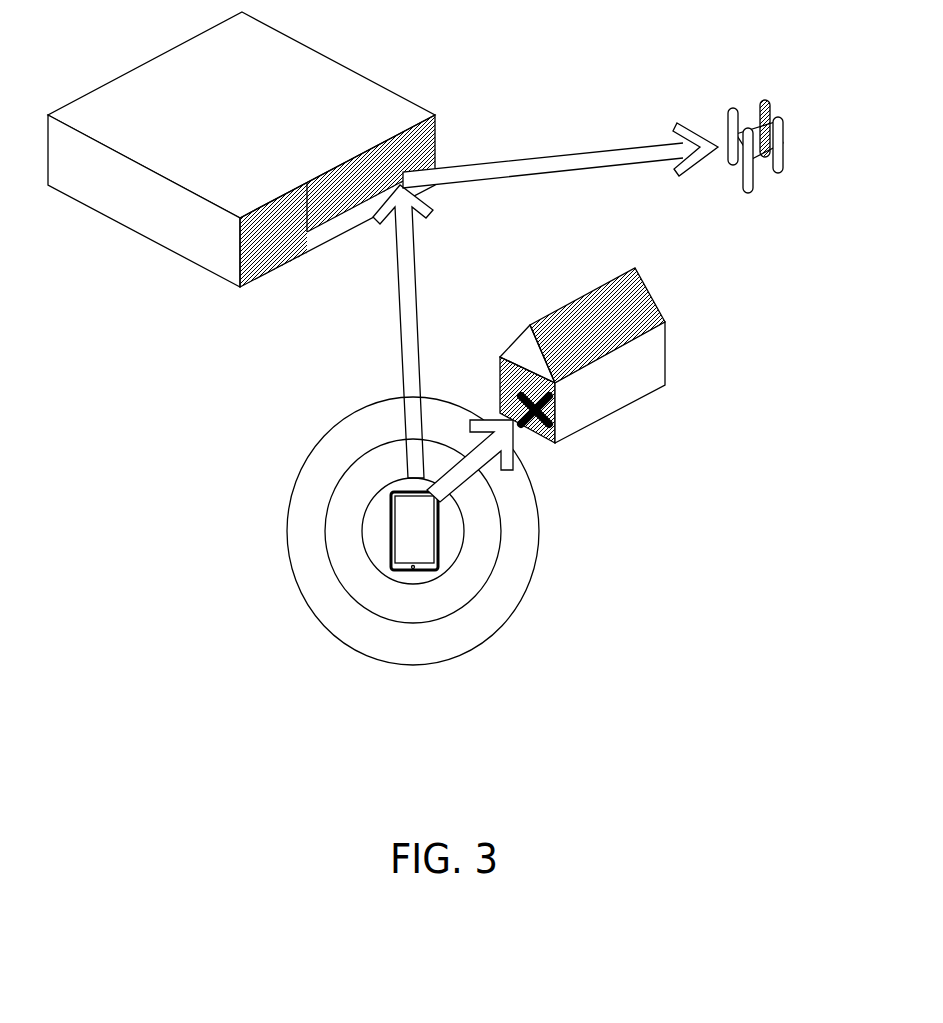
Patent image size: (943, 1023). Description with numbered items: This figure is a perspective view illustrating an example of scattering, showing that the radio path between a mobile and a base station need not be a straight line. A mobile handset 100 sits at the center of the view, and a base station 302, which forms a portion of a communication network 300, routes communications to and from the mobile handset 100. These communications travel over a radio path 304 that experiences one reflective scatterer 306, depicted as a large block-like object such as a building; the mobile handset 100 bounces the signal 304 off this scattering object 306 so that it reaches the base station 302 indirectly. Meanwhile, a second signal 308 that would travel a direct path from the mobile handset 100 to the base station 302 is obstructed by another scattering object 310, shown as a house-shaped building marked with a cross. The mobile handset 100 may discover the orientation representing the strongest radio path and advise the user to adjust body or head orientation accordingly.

The mobile handset 100 is at (390, 541).
The communication network 300 is at (763, 118).
The base station 302 is at (728, 122).
The radio path 304 is at (513, 158).
The reflective scatterer 306 is at (333, 58).
The signal 308 is at (502, 450).
The scattering object 310 is at (622, 410).